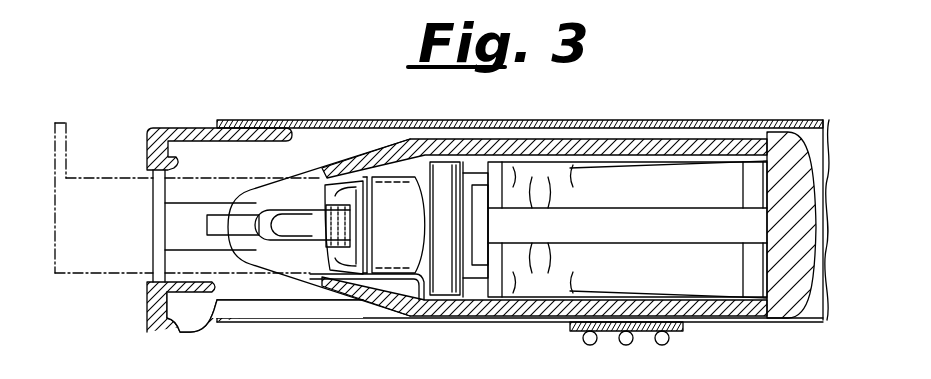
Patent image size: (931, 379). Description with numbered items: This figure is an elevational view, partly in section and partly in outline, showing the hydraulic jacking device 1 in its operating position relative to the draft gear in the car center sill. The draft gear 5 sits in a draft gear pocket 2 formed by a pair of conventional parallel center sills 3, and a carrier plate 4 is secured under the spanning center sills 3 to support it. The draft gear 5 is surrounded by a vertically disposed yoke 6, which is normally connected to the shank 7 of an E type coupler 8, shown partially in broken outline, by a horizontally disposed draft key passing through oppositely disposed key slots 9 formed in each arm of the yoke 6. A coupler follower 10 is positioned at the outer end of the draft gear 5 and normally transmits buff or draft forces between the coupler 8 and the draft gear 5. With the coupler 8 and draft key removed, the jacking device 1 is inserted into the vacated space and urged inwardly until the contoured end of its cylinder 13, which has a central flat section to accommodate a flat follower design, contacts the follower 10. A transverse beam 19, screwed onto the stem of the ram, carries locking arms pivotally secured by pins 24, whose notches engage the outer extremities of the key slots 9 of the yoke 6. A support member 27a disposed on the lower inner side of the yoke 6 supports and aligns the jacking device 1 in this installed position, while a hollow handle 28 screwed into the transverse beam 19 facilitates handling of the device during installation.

The hydraulic jacking device 1 is at (393, 280).
The draft gear pocket 2 is at (668, 128).
The center sills 3 is at (327, 306).
The carrier plate 4 is at (641, 326).
The draft gear 5 is at (620, 180).
The yoke 6 is at (507, 148).
The shank 7 is at (197, 150).
The coupler 8 is at (110, 192).
The key slots 9 is at (298, 237).
The coupler follower 10 is at (441, 290).
The cylinder 13 is at (414, 199).
The transverse beam 19 is at (343, 195).
The pins 24 is at (337, 224).
The support member 27a is at (430, 284).
The hollow handle 28 is at (207, 224).